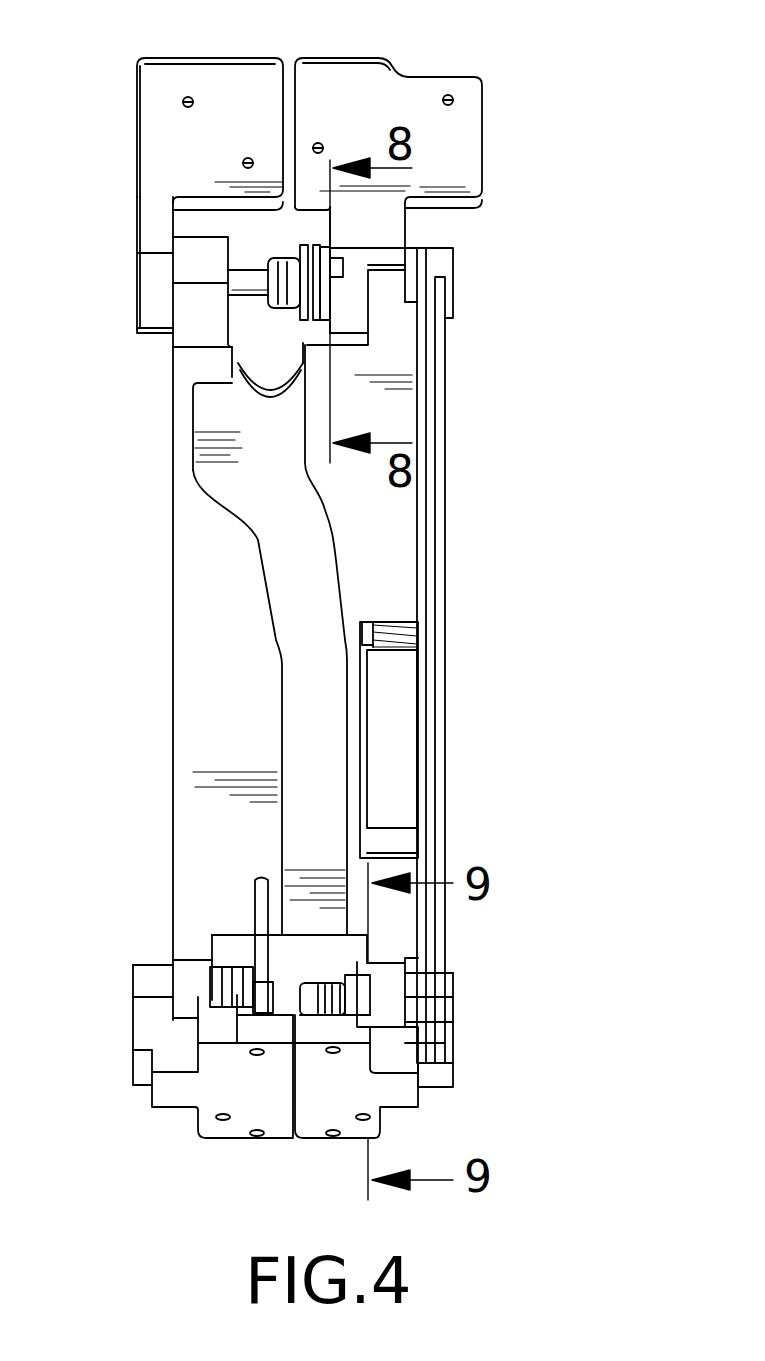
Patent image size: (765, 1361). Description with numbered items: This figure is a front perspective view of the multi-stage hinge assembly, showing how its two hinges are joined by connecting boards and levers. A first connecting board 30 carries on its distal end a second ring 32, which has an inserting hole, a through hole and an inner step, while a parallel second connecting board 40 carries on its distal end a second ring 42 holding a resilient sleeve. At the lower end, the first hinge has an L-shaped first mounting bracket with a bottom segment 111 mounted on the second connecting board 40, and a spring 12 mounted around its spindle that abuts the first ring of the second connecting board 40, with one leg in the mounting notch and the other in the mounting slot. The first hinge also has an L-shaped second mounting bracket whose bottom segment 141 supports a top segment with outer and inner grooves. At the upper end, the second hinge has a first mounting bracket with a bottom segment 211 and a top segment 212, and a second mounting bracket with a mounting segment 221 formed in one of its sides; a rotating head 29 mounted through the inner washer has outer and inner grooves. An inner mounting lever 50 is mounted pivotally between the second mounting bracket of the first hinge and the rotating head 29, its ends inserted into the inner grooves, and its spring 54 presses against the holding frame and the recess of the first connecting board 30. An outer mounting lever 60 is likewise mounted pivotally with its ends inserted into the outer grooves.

The spring 12 is at (217, 977).
The rotating head 29 is at (442, 257).
The first connecting board 30 is at (353, 563).
The second ring 32 is at (390, 317).
The second connecting board 40 is at (205, 620).
The second ring 42 is at (202, 310).
The inner mounting lever 50 is at (422, 583).
The spring 54 is at (403, 640).
The outer mounting lever 60 is at (445, 537).
The bottom segment 111 is at (213, 1095).
The bottom segment 141 is at (330, 1097).
The bottom segment 211 is at (153, 268).
The top segment 212 is at (163, 86).
The mounting segment 221 is at (470, 97).